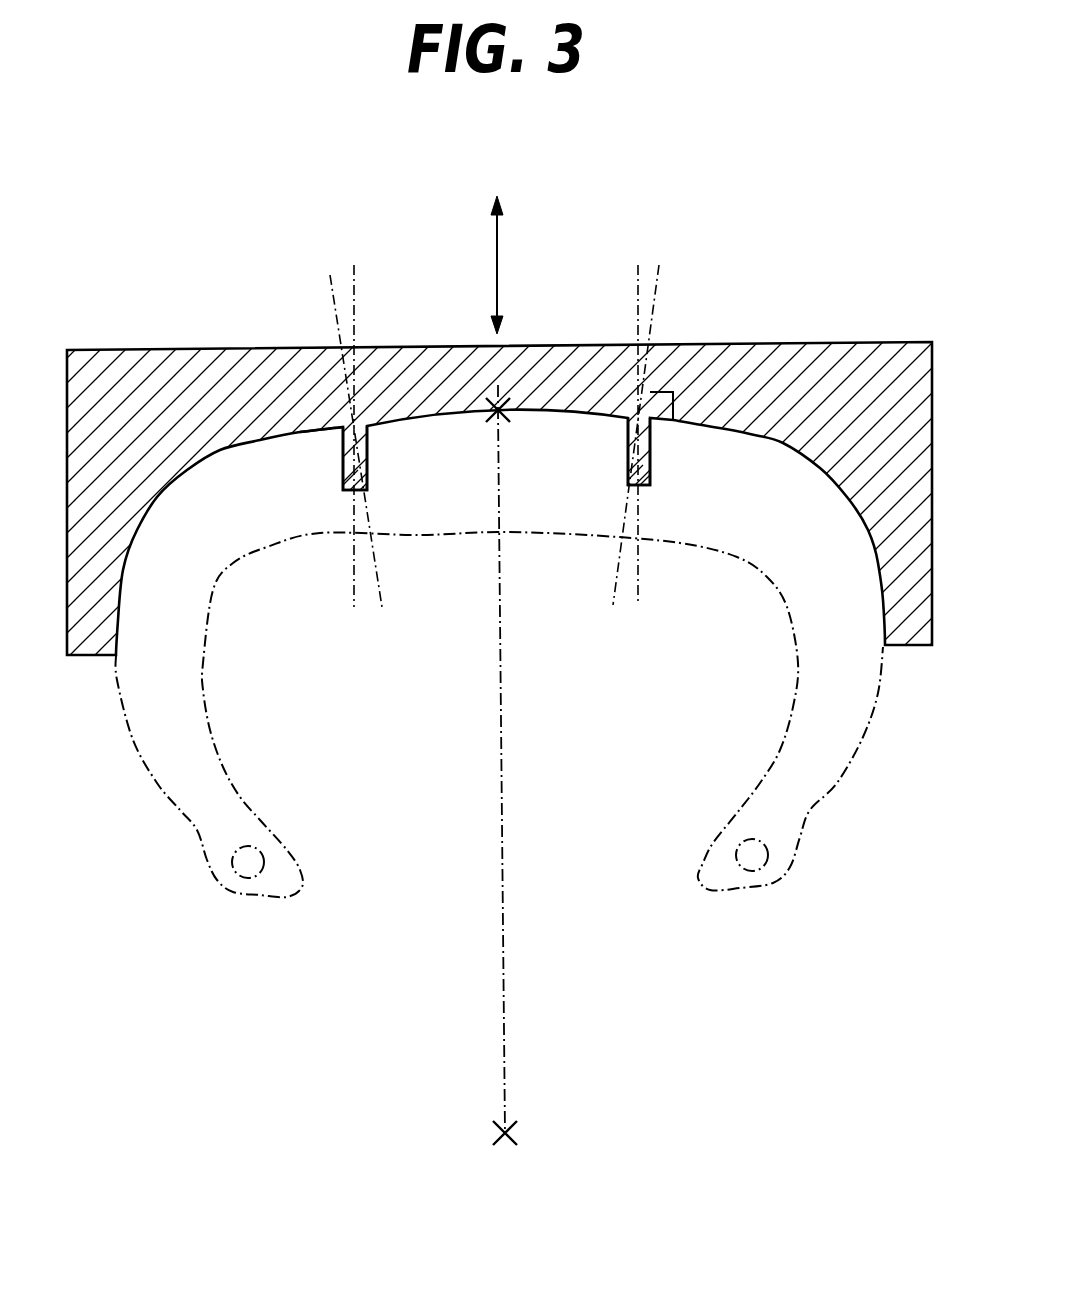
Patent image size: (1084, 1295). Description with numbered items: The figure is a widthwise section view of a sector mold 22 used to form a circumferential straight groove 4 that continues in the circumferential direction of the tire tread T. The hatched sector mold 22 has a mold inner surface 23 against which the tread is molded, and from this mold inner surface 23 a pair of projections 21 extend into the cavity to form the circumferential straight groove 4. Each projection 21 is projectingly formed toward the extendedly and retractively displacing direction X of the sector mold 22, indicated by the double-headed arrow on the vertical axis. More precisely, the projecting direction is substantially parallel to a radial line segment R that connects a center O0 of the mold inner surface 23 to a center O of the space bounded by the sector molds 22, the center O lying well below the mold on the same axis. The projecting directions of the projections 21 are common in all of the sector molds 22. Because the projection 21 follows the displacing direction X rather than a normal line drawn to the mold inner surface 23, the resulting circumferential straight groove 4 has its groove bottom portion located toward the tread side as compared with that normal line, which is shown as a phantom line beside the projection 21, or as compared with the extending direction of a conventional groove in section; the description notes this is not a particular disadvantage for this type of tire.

The sector mold 22 is at (268, 348).
The mold inner surface 23 is at (395, 420).
The circumferential straight groove 4 is at (347, 477).
The projection 21 is at (367, 473).
The tire T is at (217, 603).
The radial line segment R is at (498, 775).
The extendedly and retractively displacing direction X is at (497, 282).
The center of mold inner surface O0 is at (507, 408).
The center of space bounded by sector molds O is at (525, 1129).